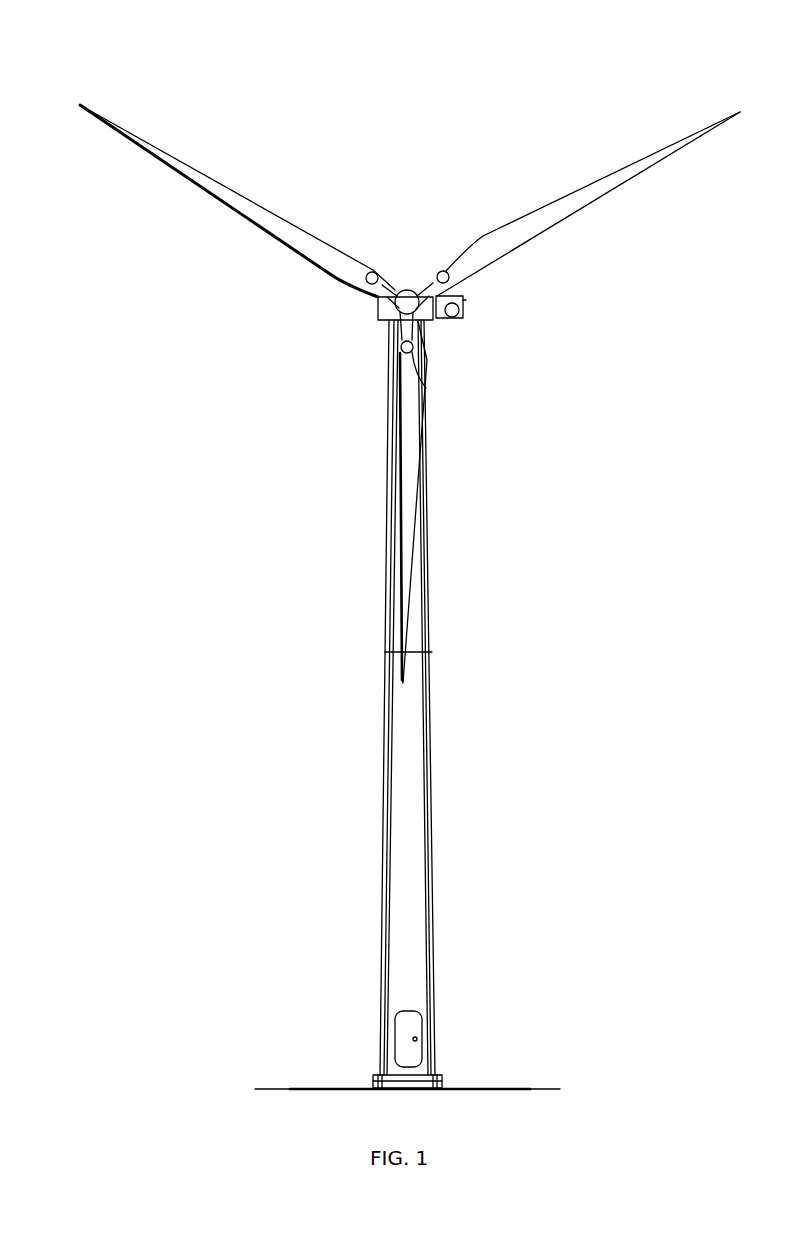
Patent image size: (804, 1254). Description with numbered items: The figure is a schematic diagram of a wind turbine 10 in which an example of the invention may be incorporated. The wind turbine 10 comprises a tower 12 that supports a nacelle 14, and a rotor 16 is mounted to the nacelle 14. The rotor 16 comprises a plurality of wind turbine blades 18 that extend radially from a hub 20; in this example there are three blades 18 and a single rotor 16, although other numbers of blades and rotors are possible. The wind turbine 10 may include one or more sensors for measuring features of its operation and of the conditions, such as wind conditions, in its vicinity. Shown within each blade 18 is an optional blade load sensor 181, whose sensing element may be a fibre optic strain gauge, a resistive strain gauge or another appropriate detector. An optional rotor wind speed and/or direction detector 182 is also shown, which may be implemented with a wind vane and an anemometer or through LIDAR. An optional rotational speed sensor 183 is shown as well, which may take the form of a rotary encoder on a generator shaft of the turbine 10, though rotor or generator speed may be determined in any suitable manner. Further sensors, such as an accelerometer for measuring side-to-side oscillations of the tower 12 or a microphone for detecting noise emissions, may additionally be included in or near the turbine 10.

The wind turbine 10 is at (632, 93).
The tower 12 is at (417, 750).
The nacelle 14 is at (440, 320).
The rotor 16 is at (359, 333).
The wind turbine blade 18 is at (305, 237).
The hub 20 is at (414, 291).
The blade load sensor 181 is at (378, 270).
The rotor wind speed and/or direction detector 182 is at (463, 300).
The rotational speed sensor 183 is at (404, 290).